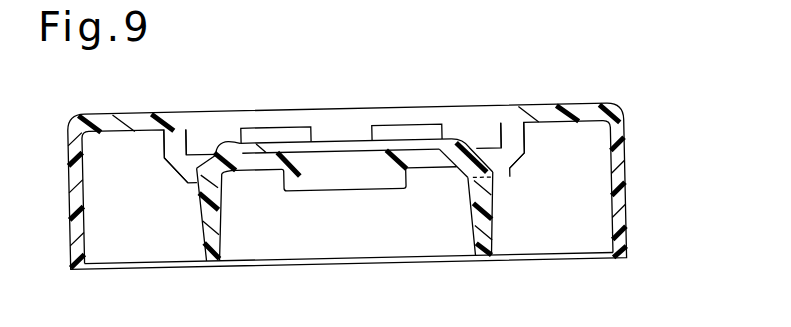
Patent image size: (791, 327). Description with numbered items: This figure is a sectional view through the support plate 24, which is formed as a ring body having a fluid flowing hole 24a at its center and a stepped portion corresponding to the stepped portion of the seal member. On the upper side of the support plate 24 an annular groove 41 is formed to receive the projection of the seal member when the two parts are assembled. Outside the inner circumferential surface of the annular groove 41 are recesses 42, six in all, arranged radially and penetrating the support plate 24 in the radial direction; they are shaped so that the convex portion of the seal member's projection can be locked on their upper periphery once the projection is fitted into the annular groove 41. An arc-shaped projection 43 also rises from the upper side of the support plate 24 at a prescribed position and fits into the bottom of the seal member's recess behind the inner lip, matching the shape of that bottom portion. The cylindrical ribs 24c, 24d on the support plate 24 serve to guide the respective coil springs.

The support plate 24 is at (609, 98).
The fluid flowing hole 24a is at (327, 158).
The cylindrical rib 24c is at (204, 261).
The cylindrical rib 24d is at (71, 179).
The annular groove 41 is at (505, 160).
The recess 42 is at (173, 138).
The arc-shaped projection 43 is at (227, 141).